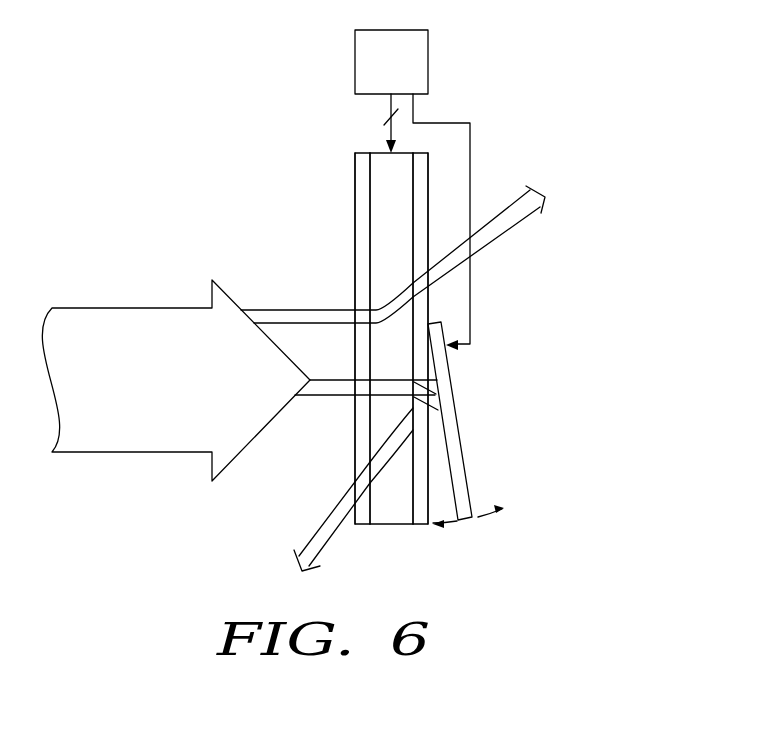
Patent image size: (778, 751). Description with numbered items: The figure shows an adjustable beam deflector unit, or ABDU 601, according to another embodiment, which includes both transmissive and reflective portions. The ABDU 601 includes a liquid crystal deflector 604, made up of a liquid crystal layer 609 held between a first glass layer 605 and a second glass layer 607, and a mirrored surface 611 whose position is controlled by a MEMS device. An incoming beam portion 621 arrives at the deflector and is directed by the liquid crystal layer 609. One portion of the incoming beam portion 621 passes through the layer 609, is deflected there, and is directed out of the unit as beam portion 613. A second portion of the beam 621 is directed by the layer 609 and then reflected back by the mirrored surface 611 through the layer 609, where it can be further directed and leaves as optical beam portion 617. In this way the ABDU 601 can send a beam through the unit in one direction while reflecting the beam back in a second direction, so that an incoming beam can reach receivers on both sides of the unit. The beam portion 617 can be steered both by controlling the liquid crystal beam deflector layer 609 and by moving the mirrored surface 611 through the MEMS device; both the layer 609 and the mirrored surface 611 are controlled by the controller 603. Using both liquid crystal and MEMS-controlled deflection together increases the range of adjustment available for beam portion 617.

The adjustable beam deflector unit 601 is at (585, 44).
The controller 603 is at (412, 74).
The liquid crystal deflector 604 is at (391, 540).
The glass layer 605 is at (358, 221).
The glass layer 607 is at (421, 182).
The liquid crystal layer 609 is at (378, 182).
The mirrored surface 611 is at (454, 433).
The beam portion 613 is at (500, 232).
The optical beam portion 617 is at (326, 533).
The incoming beam portion 621 is at (175, 396).